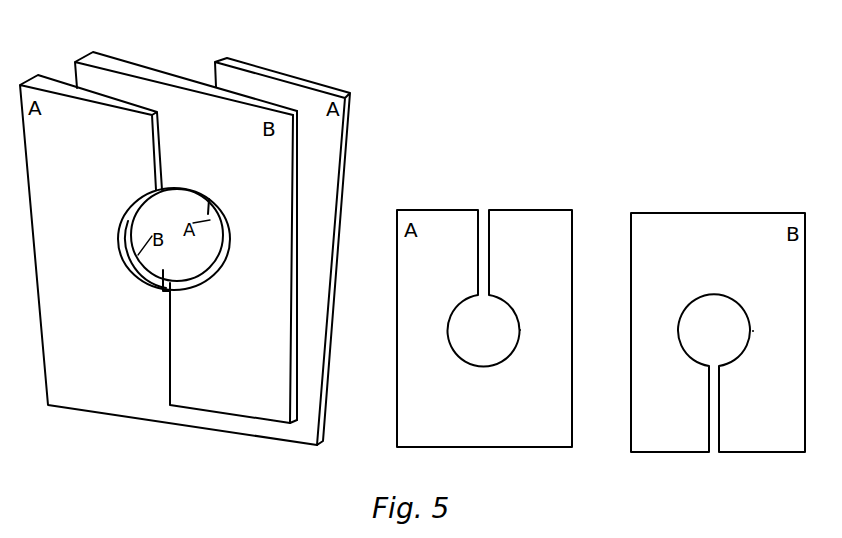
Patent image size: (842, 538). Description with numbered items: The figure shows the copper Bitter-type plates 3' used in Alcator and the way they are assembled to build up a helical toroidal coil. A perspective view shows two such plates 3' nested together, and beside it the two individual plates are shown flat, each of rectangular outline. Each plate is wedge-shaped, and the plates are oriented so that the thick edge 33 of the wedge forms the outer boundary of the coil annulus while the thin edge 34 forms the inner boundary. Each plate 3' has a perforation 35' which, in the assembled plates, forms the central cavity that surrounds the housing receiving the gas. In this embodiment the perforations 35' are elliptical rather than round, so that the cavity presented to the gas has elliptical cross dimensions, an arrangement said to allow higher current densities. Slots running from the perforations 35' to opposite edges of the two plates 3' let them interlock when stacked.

The copper Bitter plate 3' is at (412, 271).
The thick edge 33 is at (82, 57).
The thin edge 34 is at (297, 163).
The elliptical perforation 35' is at (585, 355).